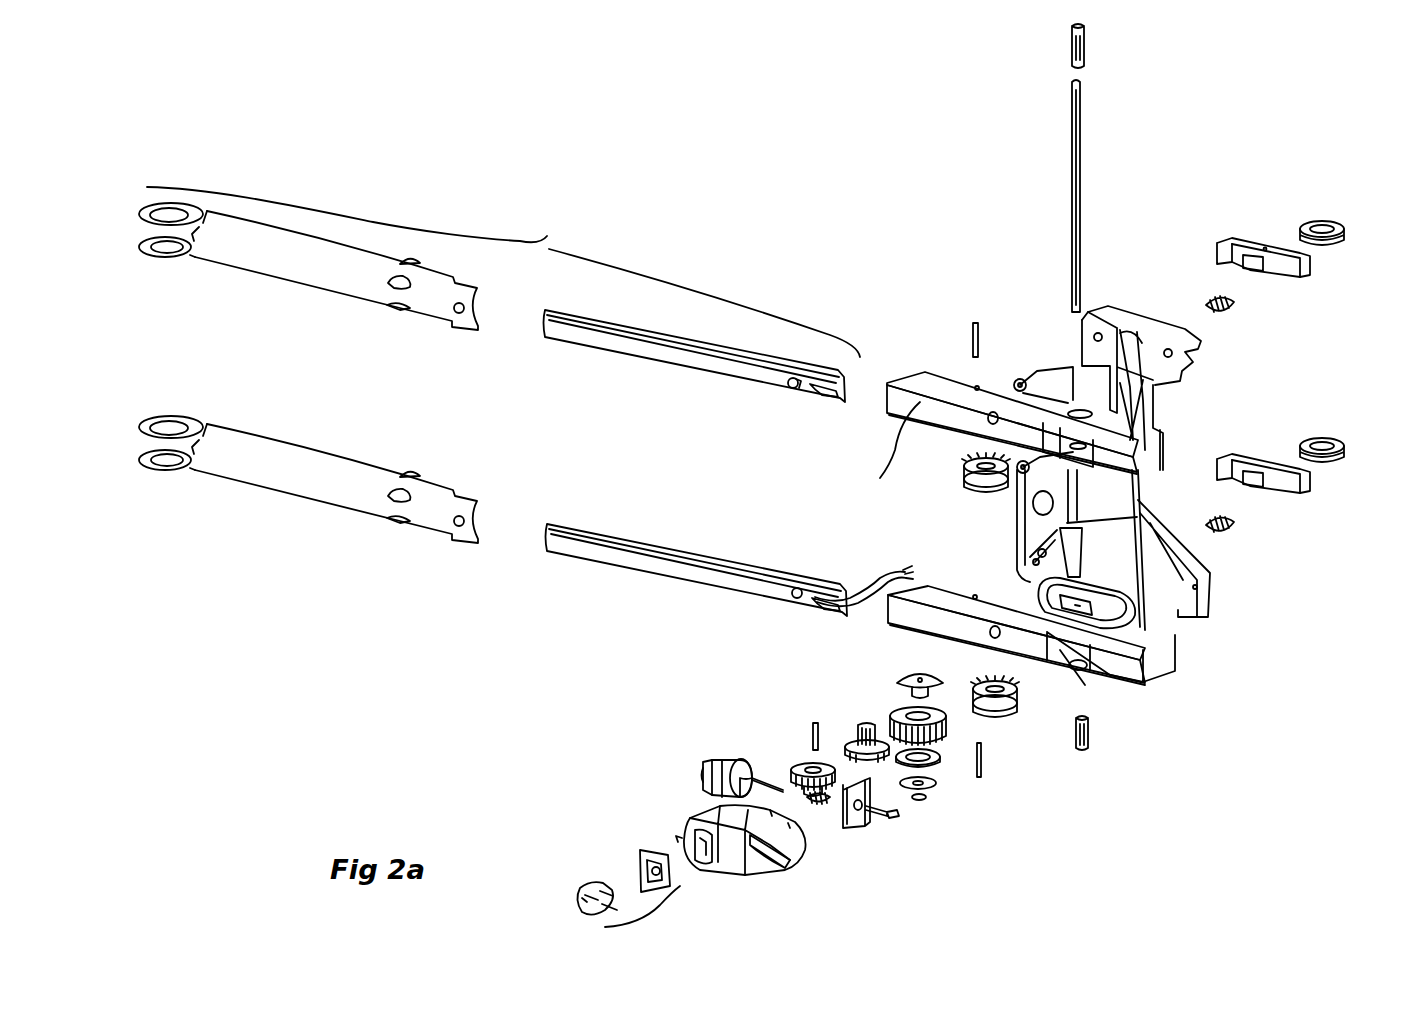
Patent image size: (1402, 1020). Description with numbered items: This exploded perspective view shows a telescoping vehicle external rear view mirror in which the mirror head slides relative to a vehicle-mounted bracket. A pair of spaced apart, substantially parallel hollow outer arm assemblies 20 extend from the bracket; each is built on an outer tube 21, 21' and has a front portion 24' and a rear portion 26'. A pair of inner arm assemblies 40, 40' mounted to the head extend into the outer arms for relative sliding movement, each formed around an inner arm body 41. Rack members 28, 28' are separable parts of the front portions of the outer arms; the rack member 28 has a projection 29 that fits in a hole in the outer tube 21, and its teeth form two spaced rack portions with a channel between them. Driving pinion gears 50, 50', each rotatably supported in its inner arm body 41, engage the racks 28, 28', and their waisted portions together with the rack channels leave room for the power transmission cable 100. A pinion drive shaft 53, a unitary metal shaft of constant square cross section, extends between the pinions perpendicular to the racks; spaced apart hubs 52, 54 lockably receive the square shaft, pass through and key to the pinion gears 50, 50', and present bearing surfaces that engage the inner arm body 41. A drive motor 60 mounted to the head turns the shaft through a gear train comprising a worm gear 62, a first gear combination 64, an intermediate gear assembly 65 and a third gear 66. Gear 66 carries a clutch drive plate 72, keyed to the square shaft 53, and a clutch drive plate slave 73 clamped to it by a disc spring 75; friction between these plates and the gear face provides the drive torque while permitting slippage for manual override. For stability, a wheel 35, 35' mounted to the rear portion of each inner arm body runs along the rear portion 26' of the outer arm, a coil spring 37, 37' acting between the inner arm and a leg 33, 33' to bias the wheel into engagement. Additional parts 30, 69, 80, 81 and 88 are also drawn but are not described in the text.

The outer arm assembly 20 is at (503, 272).
The outer tube 21 is at (308, 276).
The outer tube 21' is at (308, 489).
The front portion 24' is at (333, 549).
The rear portion 26' is at (416, 414).
The rack member 28 is at (695, 372).
The rack member 28' is at (697, 585).
The projection 29 is at (789, 392).
The frame 30 is at (1210, 582).
The leg 33 is at (1283, 281).
The leg 33' is at (1289, 505).
The wheel 35 is at (1341, 207).
The wheel 35' is at (1345, 424).
The coil spring 37 is at (1261, 325).
The coil spring 37' is at (1254, 536).
The inner arm assembly 40 is at (988, 374).
The inner arm assembly 40' is at (958, 635).
The inner arm body 41 is at (880, 449).
The driving pinion gear 50 is at (956, 487).
The driving pinion gear 50' is at (1118, 751).
The hub 52 is at (1085, 48).
The pinion drive shaft 53 is at (1078, 170).
The hub 54 is at (1010, 725).
The drive motor 60 is at (725, 768).
The worm gear 62 is at (822, 810).
The first gear combination 64 is at (805, 762).
The intermediate gear assembly 65 is at (850, 740).
The third gear 66 is at (897, 713).
The housing 69 is at (780, 866).
The clutch drive plate 72 is at (907, 680).
The clutch drive plate slave 73 is at (943, 757).
The disc spring 75 is at (940, 790).
The cord 80 is at (647, 914).
The plug 81 is at (575, 882).
The grommet 88 is at (640, 865).
The power transmission cable 100 is at (870, 572).